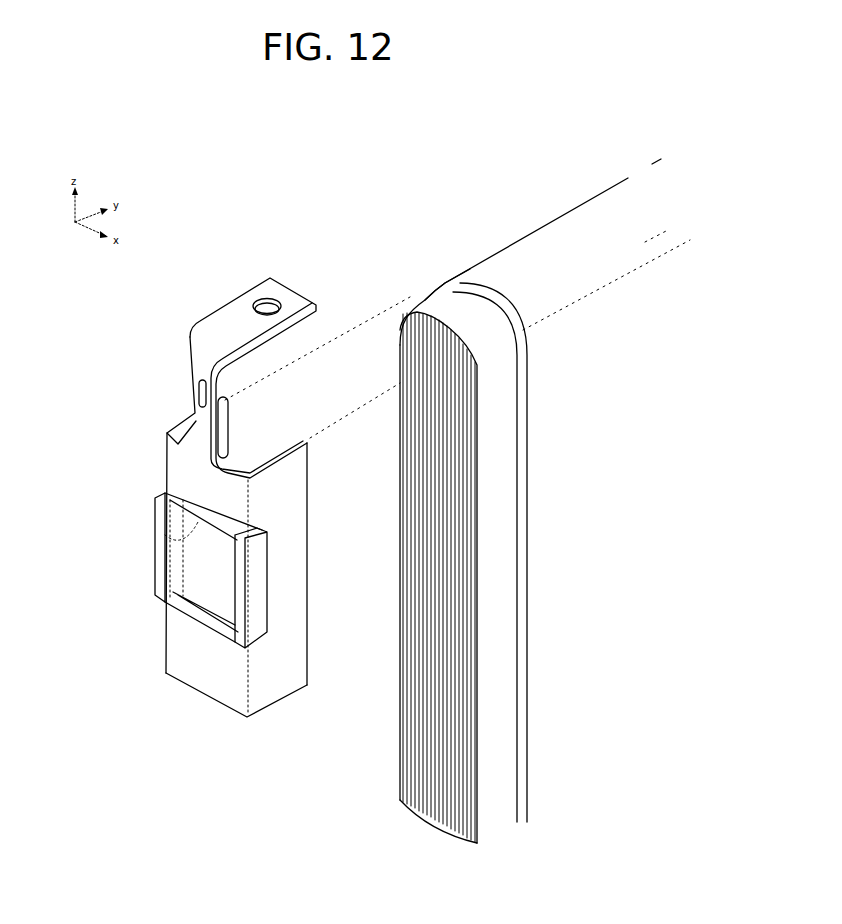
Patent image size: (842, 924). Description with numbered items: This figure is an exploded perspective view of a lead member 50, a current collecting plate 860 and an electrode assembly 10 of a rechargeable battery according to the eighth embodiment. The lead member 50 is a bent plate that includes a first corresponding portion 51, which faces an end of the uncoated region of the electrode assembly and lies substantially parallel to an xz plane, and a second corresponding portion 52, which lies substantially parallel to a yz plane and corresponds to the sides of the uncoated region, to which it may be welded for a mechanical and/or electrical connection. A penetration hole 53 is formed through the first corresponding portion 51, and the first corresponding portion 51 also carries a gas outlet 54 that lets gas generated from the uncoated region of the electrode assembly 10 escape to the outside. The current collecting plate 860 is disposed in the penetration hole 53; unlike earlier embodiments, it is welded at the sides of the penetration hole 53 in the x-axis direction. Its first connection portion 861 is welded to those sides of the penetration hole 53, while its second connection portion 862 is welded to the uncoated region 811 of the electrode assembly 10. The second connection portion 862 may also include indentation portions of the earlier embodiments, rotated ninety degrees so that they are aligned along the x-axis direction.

The electrode assembly 10 is at (522, 212).
The uncoated region 811 is at (445, 300).
The lead member 50 is at (150, 425).
The first corresponding portion 51 is at (225, 692).
The second corresponding portion 52 is at (285, 688).
The penetration hole 53 is at (155, 528).
The gas outlet 54 is at (196, 398).
The current collecting plate 860 is at (132, 567).
The first connection portion 861 is at (157, 577).
The second connection portion 862 is at (217, 592).